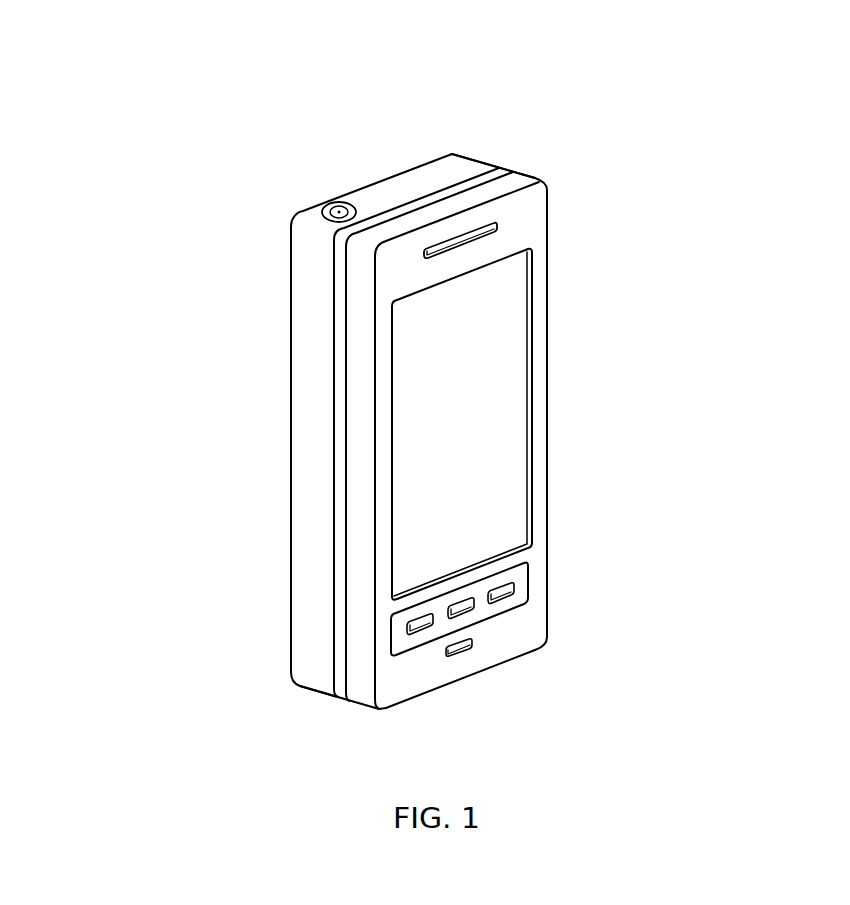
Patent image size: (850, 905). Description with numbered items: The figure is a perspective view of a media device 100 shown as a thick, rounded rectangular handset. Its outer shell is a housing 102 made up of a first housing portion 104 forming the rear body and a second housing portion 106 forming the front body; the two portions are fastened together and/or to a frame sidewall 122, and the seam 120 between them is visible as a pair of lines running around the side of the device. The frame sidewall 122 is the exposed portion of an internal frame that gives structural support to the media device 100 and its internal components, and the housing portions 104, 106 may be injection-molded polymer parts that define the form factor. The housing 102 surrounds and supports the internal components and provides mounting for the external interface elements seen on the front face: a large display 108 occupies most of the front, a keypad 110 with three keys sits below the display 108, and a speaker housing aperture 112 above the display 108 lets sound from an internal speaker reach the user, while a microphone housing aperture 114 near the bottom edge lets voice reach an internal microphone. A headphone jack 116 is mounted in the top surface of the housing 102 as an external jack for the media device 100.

The media device 100 is at (724, 106).
The housing 102 is at (290, 555).
The first housing portion 104 is at (312, 688).
The second housing portion 106 is at (363, 703).
The display 108 is at (512, 338).
The keypad 110 is at (527, 571).
The speaker housing aperture 112 is at (432, 247).
The microphone housing aperture 114 is at (470, 650).
The headphone jack 116 is at (338, 206).
The seam between housings 120 is at (333, 623).
The frame sidewall 122 is at (503, 168).